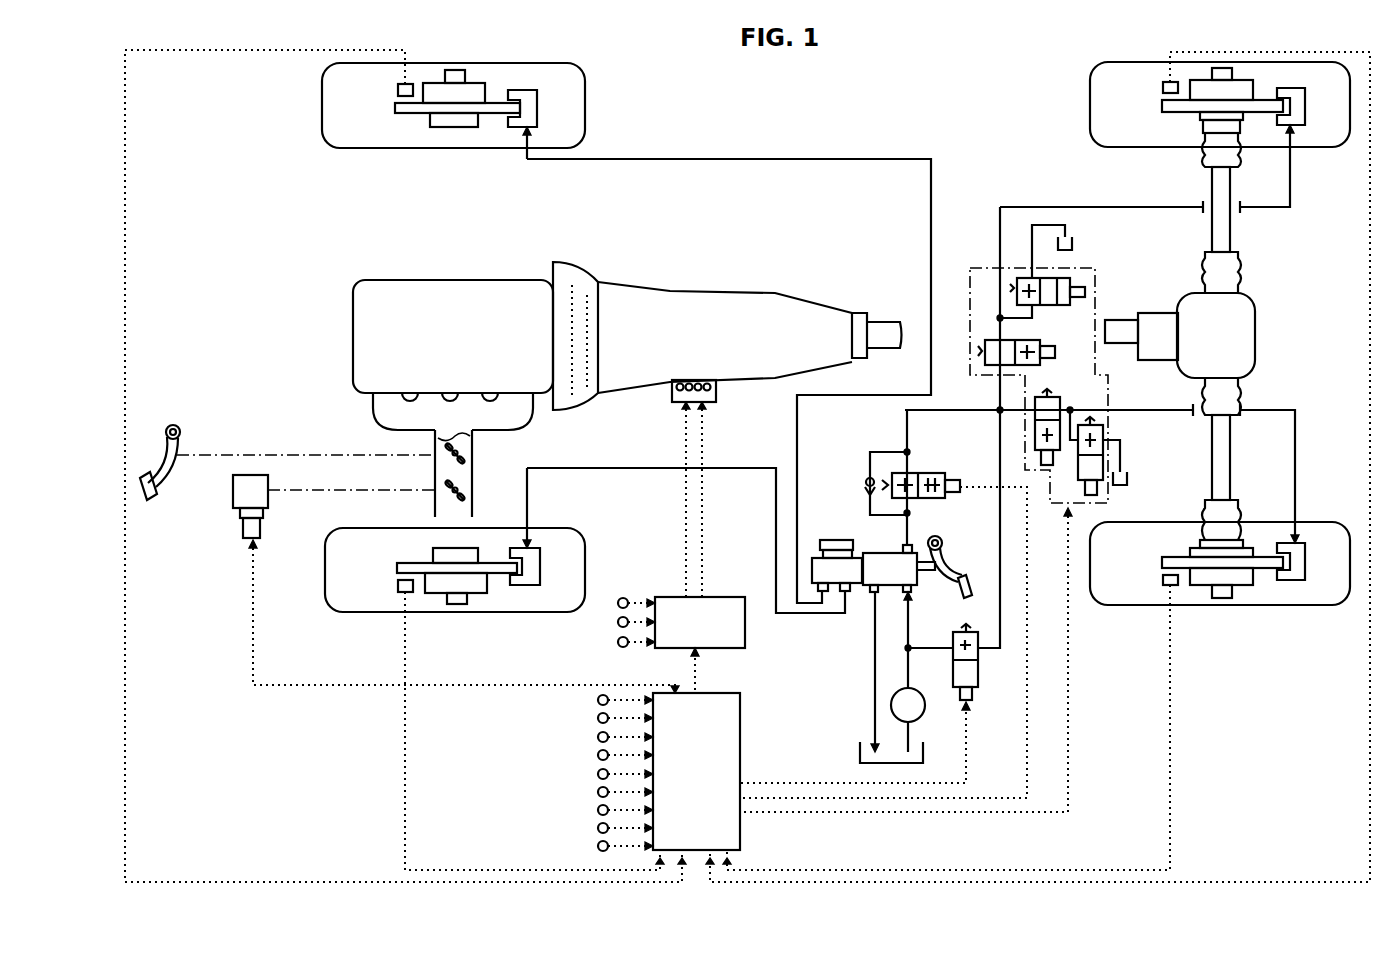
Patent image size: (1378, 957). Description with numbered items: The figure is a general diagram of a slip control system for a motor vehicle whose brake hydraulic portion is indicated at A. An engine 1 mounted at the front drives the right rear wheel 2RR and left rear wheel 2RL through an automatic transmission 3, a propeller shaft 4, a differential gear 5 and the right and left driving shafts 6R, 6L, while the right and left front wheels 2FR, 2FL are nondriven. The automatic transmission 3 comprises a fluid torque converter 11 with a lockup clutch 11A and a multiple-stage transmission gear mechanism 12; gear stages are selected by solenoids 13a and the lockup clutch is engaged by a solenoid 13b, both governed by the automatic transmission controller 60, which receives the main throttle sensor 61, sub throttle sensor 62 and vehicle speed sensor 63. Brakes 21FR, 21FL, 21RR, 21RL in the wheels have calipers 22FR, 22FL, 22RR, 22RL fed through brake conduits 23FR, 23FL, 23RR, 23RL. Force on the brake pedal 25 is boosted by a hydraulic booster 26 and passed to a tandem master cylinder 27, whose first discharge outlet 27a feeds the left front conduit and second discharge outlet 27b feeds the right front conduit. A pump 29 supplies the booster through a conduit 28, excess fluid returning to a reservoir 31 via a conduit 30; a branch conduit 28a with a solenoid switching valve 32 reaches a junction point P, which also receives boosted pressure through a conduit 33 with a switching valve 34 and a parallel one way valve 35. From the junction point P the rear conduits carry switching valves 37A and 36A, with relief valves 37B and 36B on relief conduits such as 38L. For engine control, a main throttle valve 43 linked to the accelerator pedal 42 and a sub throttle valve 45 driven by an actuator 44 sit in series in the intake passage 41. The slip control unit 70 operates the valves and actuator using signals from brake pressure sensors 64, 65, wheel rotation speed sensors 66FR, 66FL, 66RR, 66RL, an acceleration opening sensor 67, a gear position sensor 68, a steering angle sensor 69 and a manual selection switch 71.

The engine 1 is at (427, 282).
The automatic transmission 3 is at (686, 284).
The propeller shaft 4 is at (893, 330).
The differential gear 5 is at (1255, 345).
The right driving shaft 6R is at (1222, 240).
The left driving shaft 6L is at (1222, 470).
The fluid torque converter 11 is at (592, 280).
The lockup clutch 11A is at (588, 404).
The multiple-stage transmission gear mechanism 12 is at (745, 300).
The solenoids 13a is at (676, 402).
The solenoid 13b is at (698, 391).
The right front wheel 2FR is at (322, 106).
The left front wheel 2FL is at (325, 580).
The right rear wheel 2RR is at (1090, 106).
The left rear wheel 2RL is at (1107, 595).
The brake 21FR is at (505, 78).
The brake 21FL is at (480, 600).
The brake 21RR is at (1262, 78).
The brake 21RL is at (1250, 600).
The caliper 22FR is at (537, 110).
The caliper 22FL is at (540, 566).
The caliper 22RR is at (1305, 108).
The caliper 22RL is at (1310, 580).
The brake conduit 23FR is at (789, 158).
The brake conduit 23FL is at (600, 470).
The brake conduit 23RR is at (1070, 207).
The brake conduit 23RL is at (1295, 470).
The wheel rotation speed sensor 66FR is at (410, 84).
The wheel rotation speed sensor 66FL is at (405, 592).
The wheel rotation speed sensor 66RR is at (1170, 82).
The wheel rotation speed sensor 66RL is at (1172, 585).
The brake pedal 25 is at (953, 565).
The hydraulic booster 26 is at (880, 562).
The tandem type master cylinder 27 is at (830, 545).
The first discharge outlet 27a is at (846, 600).
The second discharge outlet 27b is at (822, 592).
The conduit 28 is at (910, 650).
The branch conduit 28a is at (985, 662).
The pump 29 is at (925, 712).
The conduit 30 is at (875, 703).
The reservoir 31 is at (860, 752).
The solenoid switching valve 32 is at (953, 640).
The conduit 33 is at (928, 412).
The solenoid switching valve 34 is at (945, 476).
The one way valve 35 is at (868, 478).
The solenoid switching valve 36A is at (1060, 402).
The solenoid switching valve 36B is at (1103, 436).
The solenoid switching valve 37A is at (1045, 347).
The solenoid switching valve 37B is at (1020, 278).
The relief conduit 38L is at (1122, 462).
The intake passage 41 is at (435, 466).
The accelerator pedal 42 is at (145, 500).
The main throttle valve 43 is at (468, 462).
The actuator 44 is at (233, 496).
The sub throttle valve 45 is at (470, 491).
The automatic transmission controller 60 is at (730, 597).
The main throttle sensor 61 is at (618, 603).
The sub throttle sensor 62 is at (618, 622).
The vehicle speed sensor 63 is at (618, 642).
The brake fluid pressure sensor 64 is at (598, 755).
The brake fluid pressure sensor 65 is at (598, 774).
The acceleration opening sensor 67 is at (598, 792).
The gear position sensor 68 is at (598, 810).
The steering angle sensor 69 is at (598, 828).
The manual selection switch 71 is at (598, 846).
The slip control unit 70 is at (740, 765).
The brake hydraulic system A is at (928, 144).
The junction point P is at (996, 407).